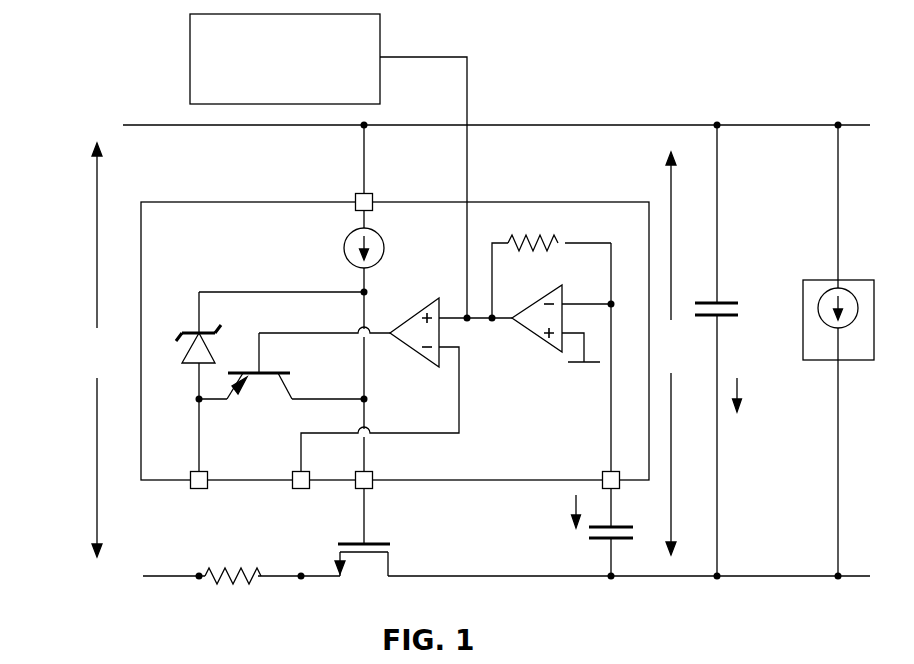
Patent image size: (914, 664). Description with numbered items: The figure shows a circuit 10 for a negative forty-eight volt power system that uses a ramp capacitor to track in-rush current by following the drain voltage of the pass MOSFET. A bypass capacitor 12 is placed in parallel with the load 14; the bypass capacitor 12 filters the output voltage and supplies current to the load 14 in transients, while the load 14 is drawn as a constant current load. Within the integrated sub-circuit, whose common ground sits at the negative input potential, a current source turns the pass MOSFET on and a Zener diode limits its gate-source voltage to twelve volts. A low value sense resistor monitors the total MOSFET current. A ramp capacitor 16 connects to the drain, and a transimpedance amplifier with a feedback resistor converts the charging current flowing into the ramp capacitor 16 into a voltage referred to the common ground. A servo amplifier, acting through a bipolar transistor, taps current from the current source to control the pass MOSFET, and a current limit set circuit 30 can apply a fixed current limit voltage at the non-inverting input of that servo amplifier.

The circuit 10 is at (646, 78).
The bypass capacitor 12 is at (703, 302).
The load 14 is at (817, 280).
The ramp capacitor 16 is at (602, 542).
The current limit set circuit 30 is at (190, 57).